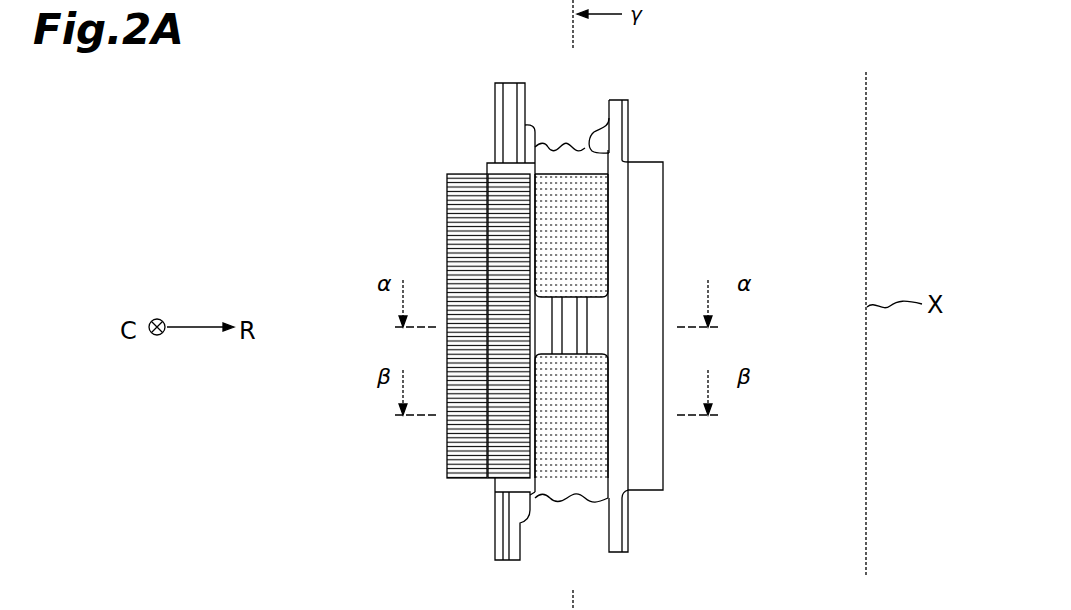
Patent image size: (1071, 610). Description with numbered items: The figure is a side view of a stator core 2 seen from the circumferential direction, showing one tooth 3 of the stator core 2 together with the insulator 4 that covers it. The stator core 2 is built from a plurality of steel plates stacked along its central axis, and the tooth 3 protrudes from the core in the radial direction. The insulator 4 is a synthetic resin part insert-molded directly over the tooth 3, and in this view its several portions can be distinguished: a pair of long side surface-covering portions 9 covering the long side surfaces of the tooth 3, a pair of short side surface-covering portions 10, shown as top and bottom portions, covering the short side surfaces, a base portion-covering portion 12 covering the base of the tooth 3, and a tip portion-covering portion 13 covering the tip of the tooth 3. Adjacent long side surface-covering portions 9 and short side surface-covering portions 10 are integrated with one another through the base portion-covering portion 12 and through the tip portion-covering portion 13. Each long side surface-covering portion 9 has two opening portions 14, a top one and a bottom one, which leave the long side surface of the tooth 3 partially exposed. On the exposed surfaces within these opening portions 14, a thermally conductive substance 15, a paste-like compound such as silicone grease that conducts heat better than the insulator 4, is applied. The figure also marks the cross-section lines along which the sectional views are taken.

The stator core 2 is at (495, 82).
The teeth 3 is at (663, 157).
The insulator 4 is at (596, 128).
The long side surface-covering portions 9 is at (597, 313).
The short side surface-covering portions 10 is at (549, 162).
The base portion-covering portion 12 is at (508, 222).
The tip portion-covering portion 13 is at (618, 443).
The opening portions 14 is at (604, 170).
The thermally conductive substance 15 is at (597, 227).